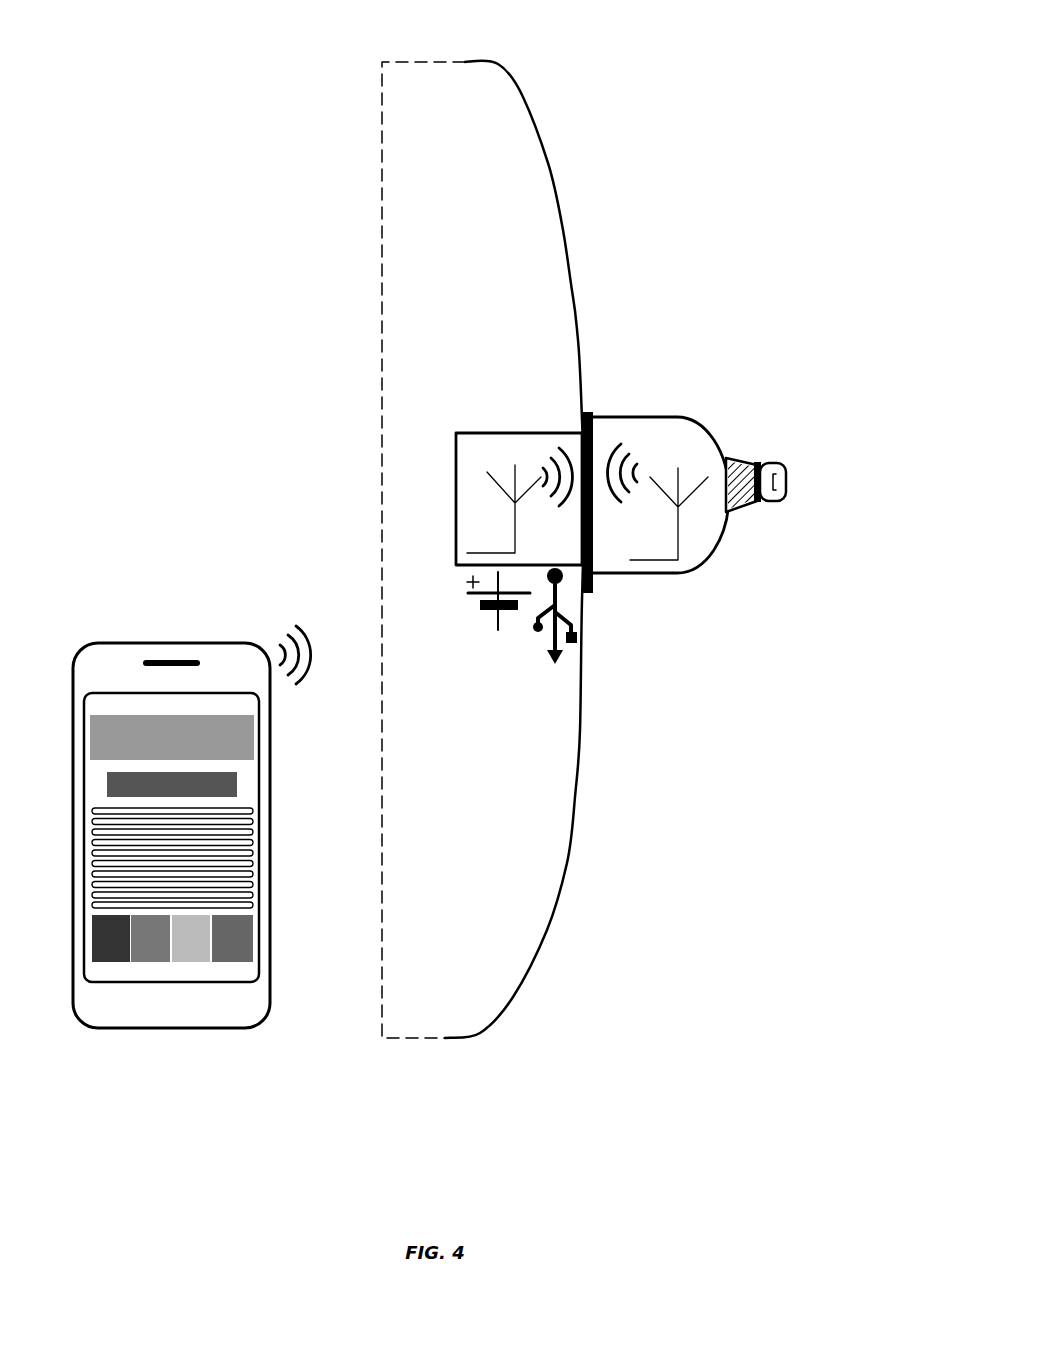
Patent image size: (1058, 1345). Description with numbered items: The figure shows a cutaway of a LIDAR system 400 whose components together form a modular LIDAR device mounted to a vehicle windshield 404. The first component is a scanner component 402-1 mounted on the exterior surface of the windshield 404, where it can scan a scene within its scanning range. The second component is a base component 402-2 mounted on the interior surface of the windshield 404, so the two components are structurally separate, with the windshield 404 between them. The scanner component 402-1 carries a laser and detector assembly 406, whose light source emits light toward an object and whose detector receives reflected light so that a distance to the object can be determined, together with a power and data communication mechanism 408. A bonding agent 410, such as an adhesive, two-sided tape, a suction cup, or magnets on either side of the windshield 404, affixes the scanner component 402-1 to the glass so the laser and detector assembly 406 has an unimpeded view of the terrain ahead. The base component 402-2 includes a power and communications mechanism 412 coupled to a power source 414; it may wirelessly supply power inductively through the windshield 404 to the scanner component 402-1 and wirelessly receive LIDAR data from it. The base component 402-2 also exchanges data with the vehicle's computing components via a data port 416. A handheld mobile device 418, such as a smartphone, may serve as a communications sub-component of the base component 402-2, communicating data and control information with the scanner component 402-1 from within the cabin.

The LIDAR system 400 is at (797, 124).
The scanner component 402-1 is at (635, 416).
The base component 402-2 is at (538, 432).
The windshield 404 is at (568, 262).
The laser and detector assembly 406 is at (757, 505).
The power and data communication mechanism 408 is at (665, 573).
The bonding agent 410 is at (588, 597).
The power and communications mechanism 412 is at (487, 473).
The power source 414 is at (488, 617).
The data port 416 is at (553, 662).
The handheld mobile device 418 is at (217, 640).